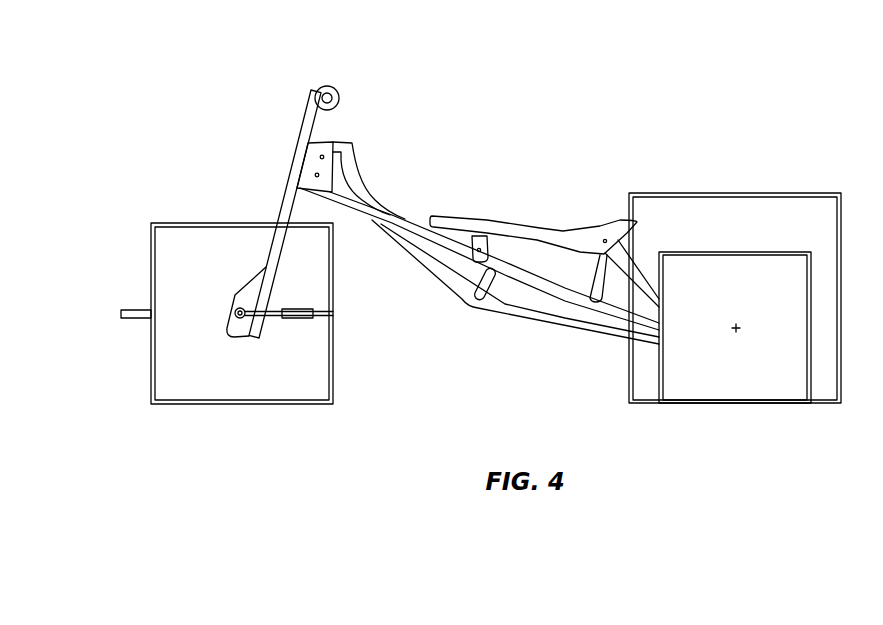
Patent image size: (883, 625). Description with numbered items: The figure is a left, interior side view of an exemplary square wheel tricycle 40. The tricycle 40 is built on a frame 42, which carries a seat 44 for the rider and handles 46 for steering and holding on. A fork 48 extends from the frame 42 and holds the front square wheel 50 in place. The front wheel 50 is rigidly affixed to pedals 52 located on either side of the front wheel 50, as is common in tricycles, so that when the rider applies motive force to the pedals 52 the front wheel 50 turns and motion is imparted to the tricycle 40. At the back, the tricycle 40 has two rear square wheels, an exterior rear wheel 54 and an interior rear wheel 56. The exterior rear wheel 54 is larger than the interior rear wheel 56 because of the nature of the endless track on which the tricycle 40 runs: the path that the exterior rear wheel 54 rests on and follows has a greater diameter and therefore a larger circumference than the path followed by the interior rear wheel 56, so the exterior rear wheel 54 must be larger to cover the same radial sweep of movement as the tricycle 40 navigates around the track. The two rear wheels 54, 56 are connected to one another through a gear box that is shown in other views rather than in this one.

The tricycle 40 is at (664, 71).
The frame 42 is at (411, 219).
The seat 44 is at (540, 232).
The handles 46 is at (328, 90).
The fork 48 is at (287, 207).
The front square wheel 50 is at (206, 248).
The pedals 52 is at (300, 318).
The exterior rear square wheel 54 is at (798, 193).
The interior rear square wheel 56 is at (793, 385).